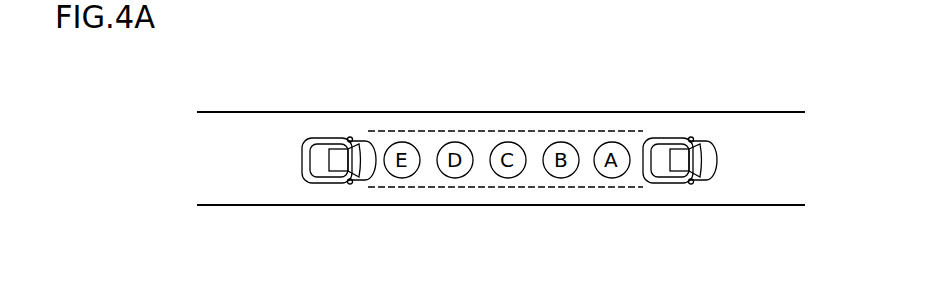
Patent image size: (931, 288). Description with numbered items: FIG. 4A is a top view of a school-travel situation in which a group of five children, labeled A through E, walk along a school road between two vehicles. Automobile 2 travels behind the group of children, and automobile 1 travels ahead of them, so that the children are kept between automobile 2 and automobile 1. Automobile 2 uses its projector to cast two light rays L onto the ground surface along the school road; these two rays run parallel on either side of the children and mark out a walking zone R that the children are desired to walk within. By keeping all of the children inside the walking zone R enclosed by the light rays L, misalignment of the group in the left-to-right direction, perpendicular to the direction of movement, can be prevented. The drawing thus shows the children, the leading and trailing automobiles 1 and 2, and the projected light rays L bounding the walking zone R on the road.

The automobile 1 is at (676, 138).
The automobile 2 is at (326, 143).
The walking zone R is at (480, 148).
The light rays L is at (555, 131).